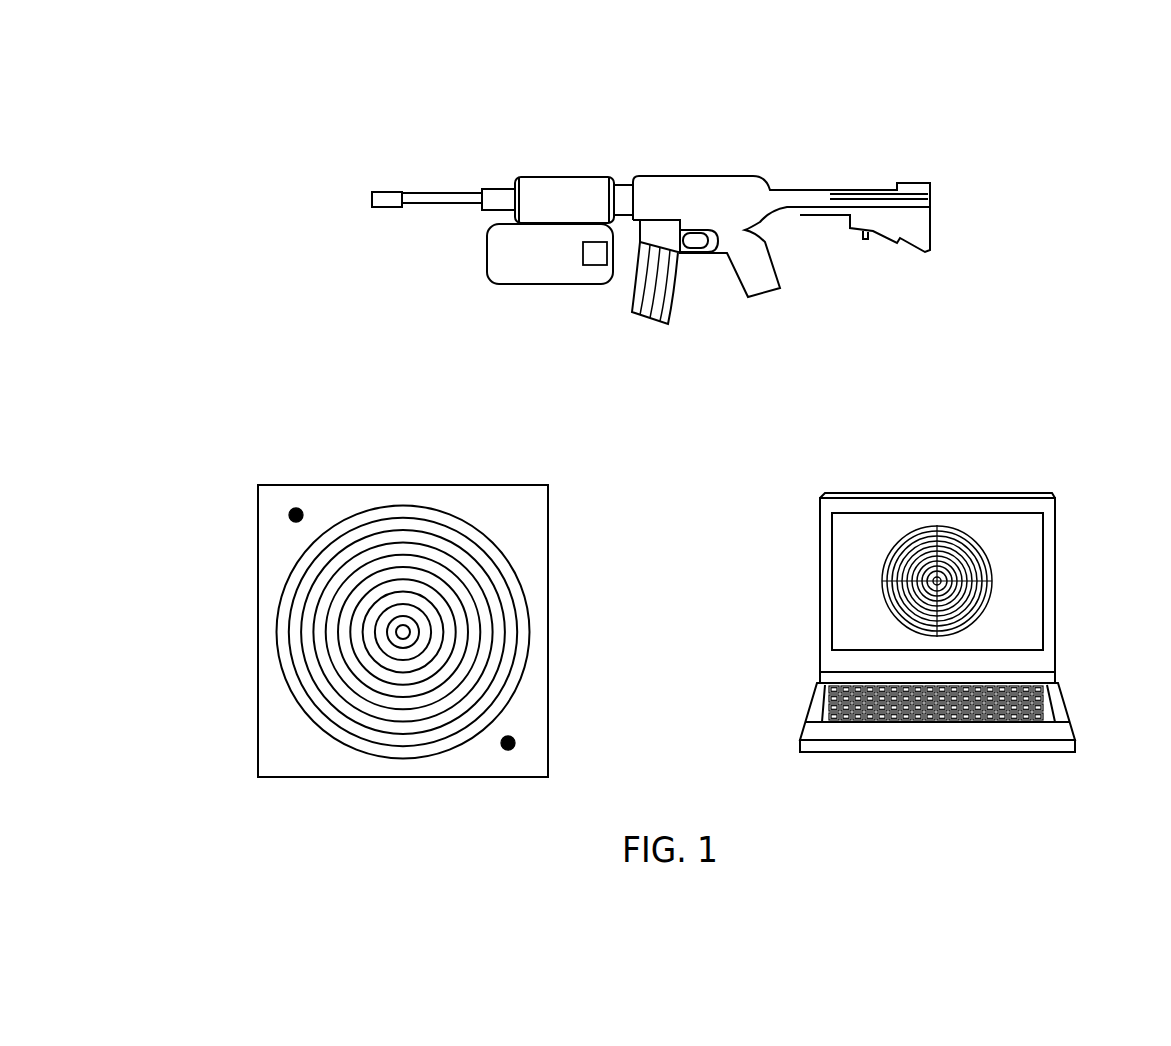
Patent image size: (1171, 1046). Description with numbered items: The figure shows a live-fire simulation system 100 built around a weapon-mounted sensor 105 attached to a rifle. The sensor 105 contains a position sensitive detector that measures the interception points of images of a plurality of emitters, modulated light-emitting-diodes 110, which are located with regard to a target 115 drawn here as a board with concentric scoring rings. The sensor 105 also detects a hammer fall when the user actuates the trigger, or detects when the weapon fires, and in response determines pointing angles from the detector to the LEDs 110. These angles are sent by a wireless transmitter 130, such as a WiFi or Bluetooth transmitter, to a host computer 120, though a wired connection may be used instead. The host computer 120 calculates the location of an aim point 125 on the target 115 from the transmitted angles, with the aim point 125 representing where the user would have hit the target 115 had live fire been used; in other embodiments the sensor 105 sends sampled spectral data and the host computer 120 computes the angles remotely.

The live-fire simulation system 100 is at (934, 121).
The weapon-mounted sensor 105 is at (514, 284).
The modulated light-emitting-diodes 110 is at (289, 515).
The target 115 is at (548, 557).
The host computer 120 is at (1055, 583).
The aim point 125 is at (952, 532).
The wireless transmitter 130 is at (595, 265).